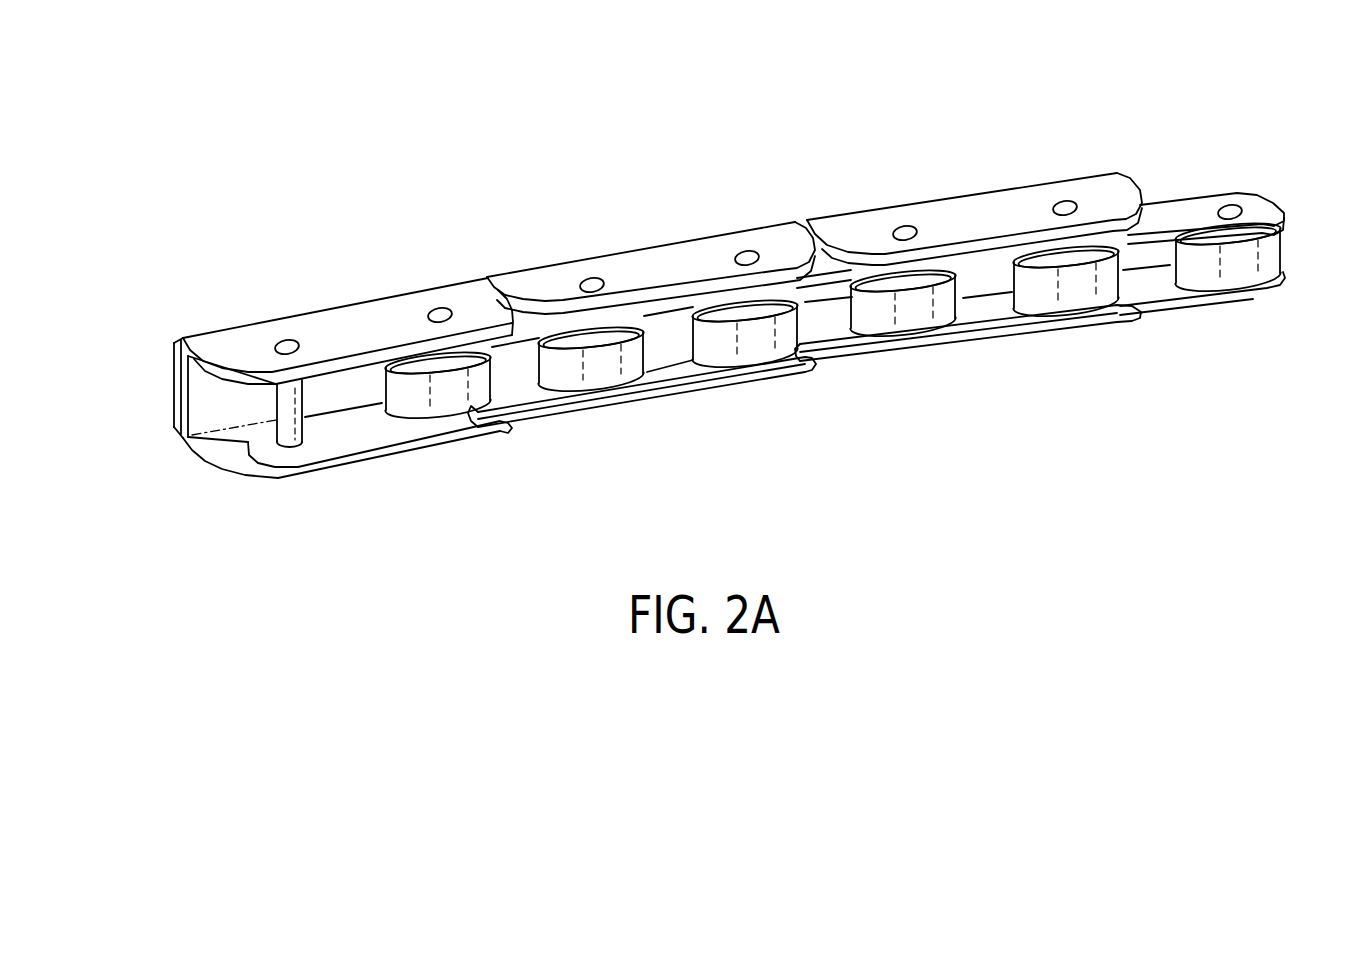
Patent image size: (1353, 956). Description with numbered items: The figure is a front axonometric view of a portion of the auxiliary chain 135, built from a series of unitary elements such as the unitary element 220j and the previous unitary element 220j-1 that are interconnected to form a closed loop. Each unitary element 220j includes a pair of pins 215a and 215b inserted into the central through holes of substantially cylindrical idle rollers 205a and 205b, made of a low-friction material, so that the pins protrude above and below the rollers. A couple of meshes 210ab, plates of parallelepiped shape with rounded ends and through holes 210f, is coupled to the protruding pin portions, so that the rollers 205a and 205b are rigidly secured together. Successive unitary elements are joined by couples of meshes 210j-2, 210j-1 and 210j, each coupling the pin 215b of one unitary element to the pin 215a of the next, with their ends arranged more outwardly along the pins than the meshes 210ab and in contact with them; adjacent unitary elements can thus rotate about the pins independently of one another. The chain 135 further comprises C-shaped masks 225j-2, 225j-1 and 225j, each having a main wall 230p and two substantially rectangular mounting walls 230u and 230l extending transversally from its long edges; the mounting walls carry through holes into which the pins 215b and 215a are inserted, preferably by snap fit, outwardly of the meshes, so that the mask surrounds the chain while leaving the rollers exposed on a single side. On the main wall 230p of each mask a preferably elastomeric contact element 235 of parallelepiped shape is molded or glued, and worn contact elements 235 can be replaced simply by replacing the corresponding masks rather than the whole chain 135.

The auxiliary chain 135 is at (256, 117).
The mask 225j-2 is at (299, 300).
The mask 225j-1 is at (659, 226).
The mask 225j is at (841, 203).
The upper mounting wall 230u is at (233, 338).
The lower mounting wall 230l is at (300, 480).
The main wall 230p is at (206, 404).
The contact element 235 is at (173, 363).
The mesh 210j-2 is at (350, 535).
The mesh 210j-1 is at (720, 425).
The mesh 210j is at (1060, 382).
The through hole 210f is at (1231, 207).
The mesh 210ab is at (497, 323).
The pin 215a is at (437, 308).
The pin 215b is at (590, 280).
The idle roller 205a is at (453, 398).
The idle roller 205b is at (617, 373).
The unitary element 220j-1 is at (586, 407).
The unitary element 220j is at (905, 349).